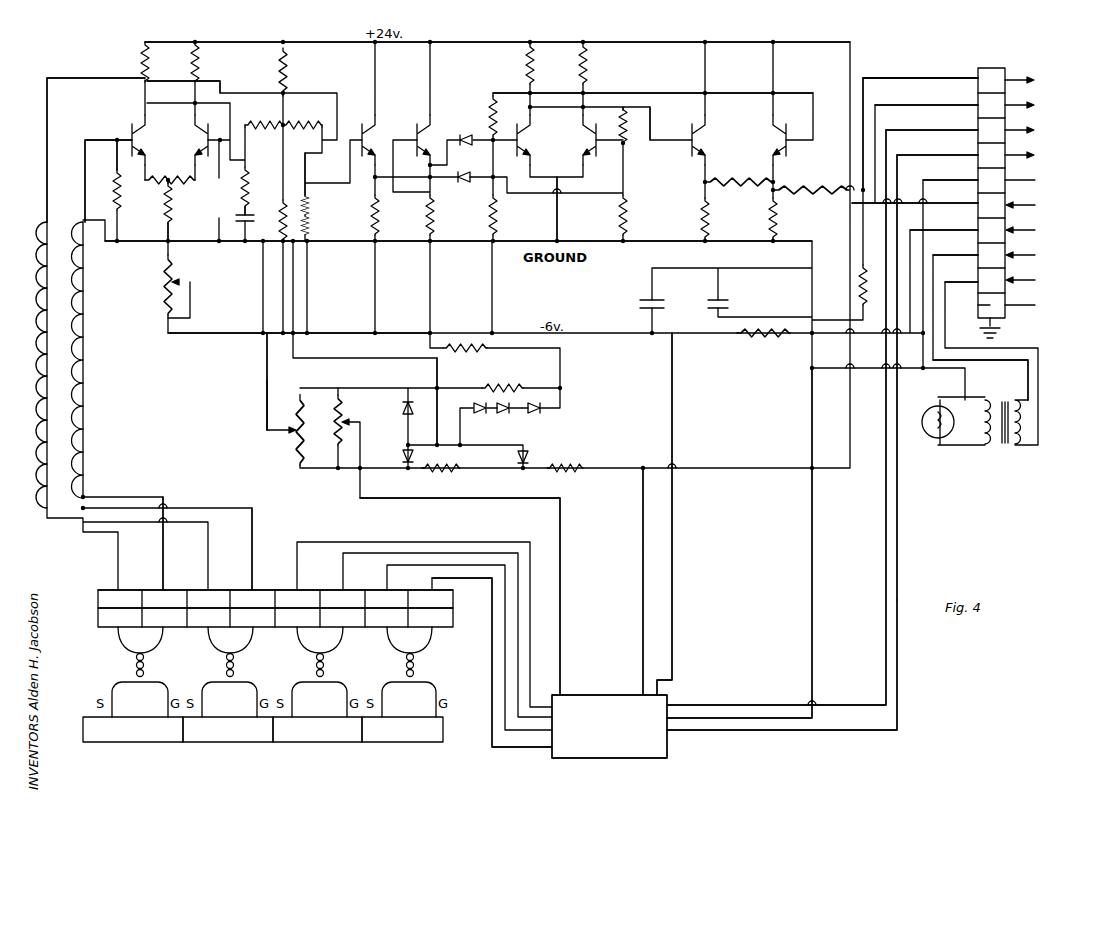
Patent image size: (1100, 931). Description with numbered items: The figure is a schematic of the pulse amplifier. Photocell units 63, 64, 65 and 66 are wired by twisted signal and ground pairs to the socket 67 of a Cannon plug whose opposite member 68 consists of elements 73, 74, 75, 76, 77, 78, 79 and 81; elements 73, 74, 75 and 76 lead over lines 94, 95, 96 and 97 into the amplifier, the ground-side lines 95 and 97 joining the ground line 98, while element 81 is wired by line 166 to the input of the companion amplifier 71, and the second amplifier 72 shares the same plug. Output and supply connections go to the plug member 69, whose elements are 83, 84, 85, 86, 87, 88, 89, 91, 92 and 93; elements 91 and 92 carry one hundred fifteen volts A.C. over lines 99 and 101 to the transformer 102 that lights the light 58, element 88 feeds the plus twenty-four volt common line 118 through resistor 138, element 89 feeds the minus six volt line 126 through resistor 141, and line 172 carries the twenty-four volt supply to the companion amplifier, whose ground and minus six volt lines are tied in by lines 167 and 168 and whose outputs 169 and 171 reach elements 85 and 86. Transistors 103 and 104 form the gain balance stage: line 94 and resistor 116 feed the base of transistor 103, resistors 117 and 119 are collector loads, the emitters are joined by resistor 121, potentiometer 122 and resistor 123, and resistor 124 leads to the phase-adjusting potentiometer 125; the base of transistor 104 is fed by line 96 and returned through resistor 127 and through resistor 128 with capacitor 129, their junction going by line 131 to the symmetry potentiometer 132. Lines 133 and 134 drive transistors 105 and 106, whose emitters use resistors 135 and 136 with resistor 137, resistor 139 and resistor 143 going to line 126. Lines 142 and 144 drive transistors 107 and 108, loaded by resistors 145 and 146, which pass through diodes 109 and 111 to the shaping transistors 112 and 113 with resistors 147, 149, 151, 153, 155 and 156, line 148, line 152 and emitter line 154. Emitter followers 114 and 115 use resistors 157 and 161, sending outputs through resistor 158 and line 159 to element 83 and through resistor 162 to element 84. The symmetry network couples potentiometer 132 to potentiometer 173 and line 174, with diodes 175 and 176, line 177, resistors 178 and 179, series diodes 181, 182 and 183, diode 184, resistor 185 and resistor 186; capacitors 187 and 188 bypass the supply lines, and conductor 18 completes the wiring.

The conductor 18 is at (899, 620).
The light 58 is at (933, 437).
The photocell unit 63 is at (147, 743).
The photocell unit 64 is at (334, 743).
The photocell unit 65 is at (246, 743).
The photocell unit 66 is at (430, 743).
The Cannon plug socket 67 is at (97, 620).
The plug member 68 is at (97, 600).
The plug member 69 is at (989, 68).
The amplifier 71 is at (602, 694).
The amplifier 72 is at (265, 376).
The plug element 73 is at (128, 590).
The plug element 74 is at (173, 590).
The plug element 75 is at (218, 590).
The plug element 76 is at (262, 590).
The plug element 77 is at (305, 590).
The plug element 78 is at (350, 590).
The plug element 79 is at (397, 590).
The plug element 81 is at (446, 588).
The plug element 83 is at (976, 84).
The plug element 84 is at (976, 108).
The plug element 85 is at (976, 133).
The plug element 86 is at (976, 158).
The plug element 87 is at (976, 184).
The plug element 88 is at (976, 207).
The plug element 89 is at (976, 233).
The plug element 91 is at (976, 258).
The plug element 92 is at (976, 285).
The plug element 93 is at (976, 307).
The line 94 is at (90, 138).
The line 95 is at (163, 547).
The line 96 is at (72, 79).
The line 97 is at (252, 547).
The ground line 98 is at (134, 242).
The line 99 is at (1040, 380).
The line 101 is at (1025, 373).
The transformer 102 is at (1016, 447).
The transistor 103 is at (128, 128).
The transistor 104 is at (195, 128).
The transistor 105 is at (255, 120).
The transistor 106 is at (308, 120).
The transistor 107 is at (360, 124).
The transistor 108 is at (418, 124).
The rectifier diode 109 is at (464, 133).
The rectifier diode 111 is at (465, 182).
The transistor 112 is at (536, 140).
The transistor 113 is at (581, 140).
The transistor 114 is at (700, 120).
The transistor 115 is at (772, 126).
The resistor 116 is at (123, 215).
The resistor 117 is at (142, 52).
The common line 118 is at (320, 42).
The resistor 119 is at (197, 57).
The resistor 121 is at (118, 188).
The potentiometer 122 is at (171, 195).
The resistor 123 is at (184, 178).
The resistor 124 is at (170, 230).
The phase-adjusting potentiometer 125 is at (190, 282).
The common line 126 is at (232, 334).
The resistor 127 is at (170, 183).
The resistor 128 is at (247, 176).
The capacitor 129 is at (245, 242).
The line 131 is at (270, 390).
The potentiometer 132 is at (288, 432).
The line 133 is at (160, 103).
The line 134 is at (286, 82).
The resistor 135 is at (264, 135).
The resistor 136 is at (302, 135).
The resistor 137 is at (280, 76).
The resistor 138 is at (860, 276).
The resistor 139 is at (283, 210).
The resistor 141 is at (765, 340).
The line 142 is at (325, 205).
The resistor 143 is at (308, 220).
The line 144 is at (313, 178).
The resistor 145 is at (378, 213).
The resistor 146 is at (432, 213).
The resistor 147 is at (492, 106).
The line 148 is at (655, 93).
The resistor 149 is at (496, 213).
The resistor 151 is at (527, 60).
The line 152 is at (652, 118).
The resistor 153 is at (626, 125).
The line 154 is at (559, 213).
The resistor 155 is at (586, 62).
The resistor 156 is at (626, 213).
The resistor 157 is at (708, 213).
The resistor 158 is at (738, 178).
The line 159 is at (892, 78).
The resistor 161 is at (776, 222).
The resistor 162 is at (790, 192).
The line 166 is at (492, 632).
The line 167 is at (810, 570).
The line 168 is at (674, 570).
The output line 169 is at (884, 570).
The output line 171 is at (899, 548).
The line 172 is at (640, 570).
The potentiometer 173 is at (357, 416).
The line 174 is at (482, 499).
The diode 175 is at (405, 414).
The diode 176 is at (402, 455).
The line 177 is at (435, 373).
The resistor 178 is at (505, 388).
The resistor 179 is at (465, 350).
The diode 181 is at (541, 422).
The diode 182 is at (504, 414).
The diode 183 is at (479, 414).
The diode 184 is at (530, 456).
The resistor 185 is at (445, 470).
The resistor 186 is at (567, 470).
The capacitor 187 is at (658, 306).
The capacitor 188 is at (712, 298).